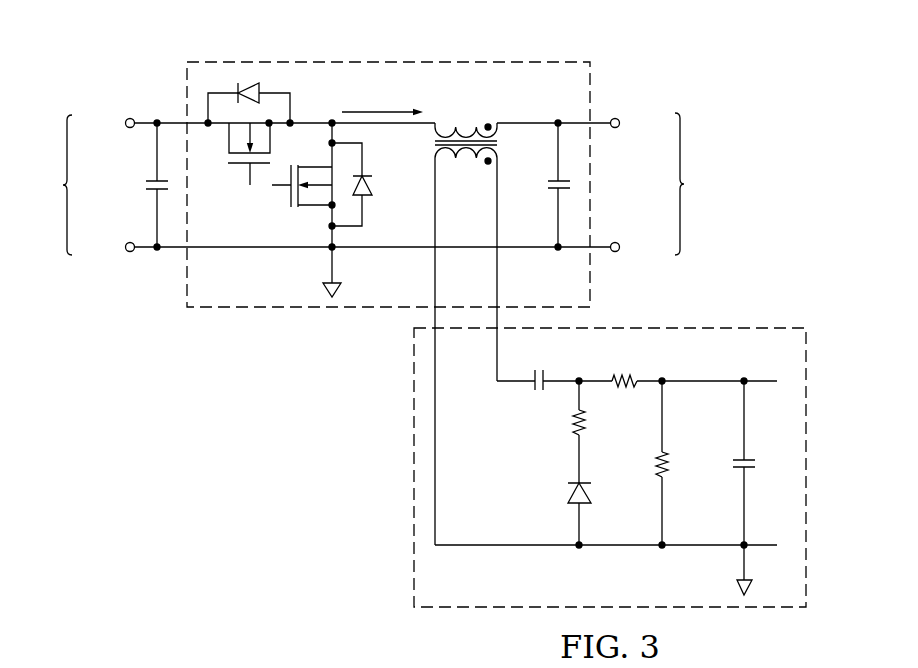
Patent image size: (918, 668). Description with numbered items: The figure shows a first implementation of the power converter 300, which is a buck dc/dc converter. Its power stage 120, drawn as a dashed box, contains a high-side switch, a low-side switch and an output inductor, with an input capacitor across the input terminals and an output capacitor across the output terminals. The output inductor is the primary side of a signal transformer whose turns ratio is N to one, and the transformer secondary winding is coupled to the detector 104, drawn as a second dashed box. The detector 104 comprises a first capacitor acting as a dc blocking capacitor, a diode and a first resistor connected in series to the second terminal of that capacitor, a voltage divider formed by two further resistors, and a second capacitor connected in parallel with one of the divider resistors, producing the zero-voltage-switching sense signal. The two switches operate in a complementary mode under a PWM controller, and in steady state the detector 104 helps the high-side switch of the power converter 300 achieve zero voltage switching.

The power stage 120 is at (358, 56).
The detector 104 is at (404, 486).
The power converter 300 is at (252, 449).